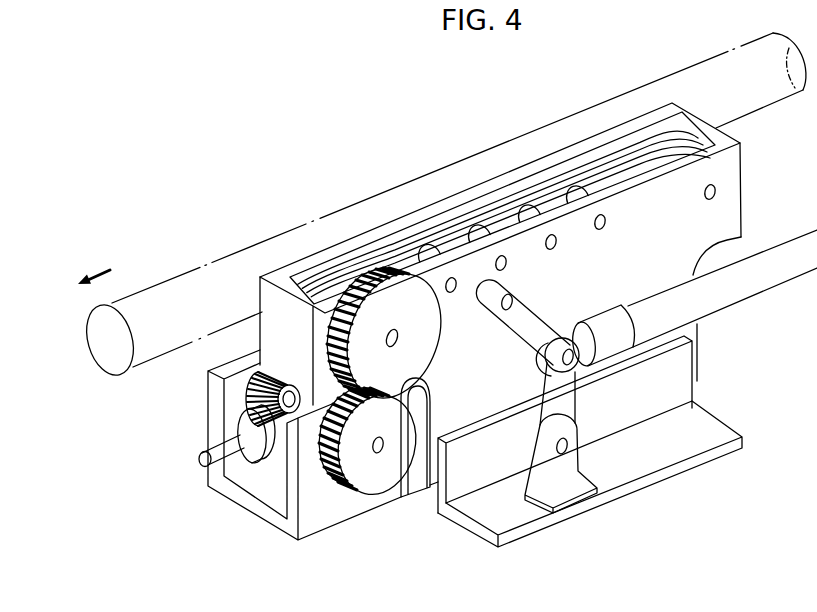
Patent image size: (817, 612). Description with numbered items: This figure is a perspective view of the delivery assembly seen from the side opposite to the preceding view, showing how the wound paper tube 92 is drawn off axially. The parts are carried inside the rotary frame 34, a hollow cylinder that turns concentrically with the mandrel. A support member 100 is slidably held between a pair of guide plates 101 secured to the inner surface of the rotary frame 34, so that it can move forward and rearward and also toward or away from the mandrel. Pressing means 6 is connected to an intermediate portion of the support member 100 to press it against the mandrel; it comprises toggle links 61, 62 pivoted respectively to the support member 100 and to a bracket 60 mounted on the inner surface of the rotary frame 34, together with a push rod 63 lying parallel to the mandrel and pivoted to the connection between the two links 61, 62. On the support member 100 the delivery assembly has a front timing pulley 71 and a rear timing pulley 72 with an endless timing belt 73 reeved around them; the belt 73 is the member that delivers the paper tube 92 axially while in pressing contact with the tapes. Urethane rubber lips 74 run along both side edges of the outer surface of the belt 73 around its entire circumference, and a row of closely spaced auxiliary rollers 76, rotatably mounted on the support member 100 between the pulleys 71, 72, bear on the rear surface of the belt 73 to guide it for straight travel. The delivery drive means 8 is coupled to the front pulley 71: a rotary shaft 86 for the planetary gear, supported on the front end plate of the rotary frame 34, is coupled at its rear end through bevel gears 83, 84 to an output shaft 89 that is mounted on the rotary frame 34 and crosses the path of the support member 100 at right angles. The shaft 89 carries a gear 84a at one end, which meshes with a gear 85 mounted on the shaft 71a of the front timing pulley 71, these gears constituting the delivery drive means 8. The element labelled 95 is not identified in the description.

The paper tube 92 is at (233, 257).
The timing pulley 72 is at (746, 141).
The support member 100 is at (723, 222).
The urethane rubber lip 74 is at (608, 157).
The timing belt 73 is at (644, 138).
The guide tube 95 is at (578, 185).
The auxiliary roller 76 is at (590, 195).
The timing pulley 71 is at (357, 278).
The gear 85 is at (397, 362).
The shaft 71a is at (400, 340).
The gear 84a is at (353, 469).
The output shaft 89 is at (380, 452).
The rotary frame 34 is at (313, 526).
The bevel gear 84 is at (253, 397).
The bevel gear 83 is at (265, 456).
The rotary shaft 86 is at (217, 486).
The delivery drive means 8 is at (191, 445).
The guide plate 101 is at (415, 487).
The pressing means 6 is at (675, 340).
The toggle link 61 is at (518, 315).
The push rod 63 is at (771, 273).
The toggle link 62 is at (568, 391).
The bracket 60 is at (573, 451).